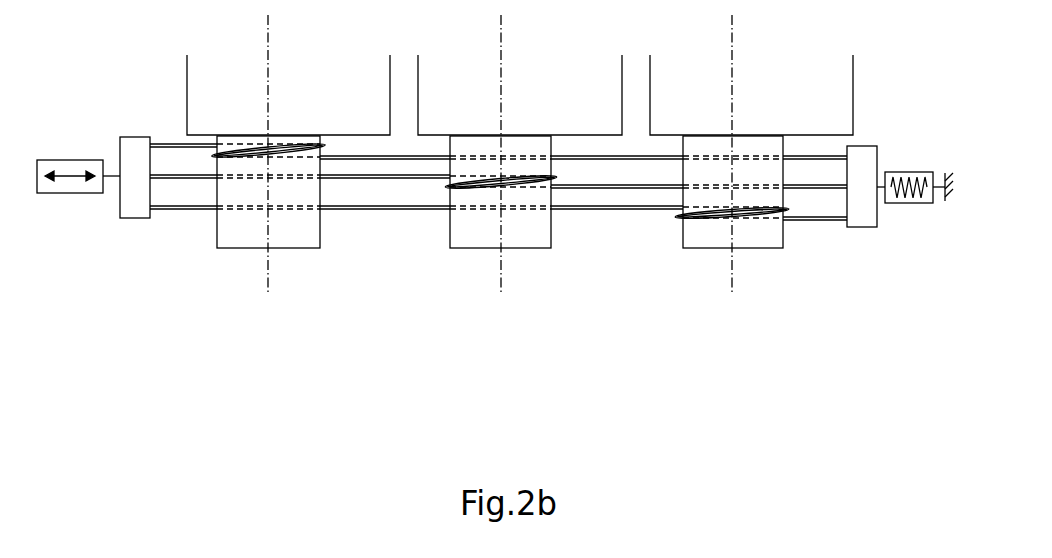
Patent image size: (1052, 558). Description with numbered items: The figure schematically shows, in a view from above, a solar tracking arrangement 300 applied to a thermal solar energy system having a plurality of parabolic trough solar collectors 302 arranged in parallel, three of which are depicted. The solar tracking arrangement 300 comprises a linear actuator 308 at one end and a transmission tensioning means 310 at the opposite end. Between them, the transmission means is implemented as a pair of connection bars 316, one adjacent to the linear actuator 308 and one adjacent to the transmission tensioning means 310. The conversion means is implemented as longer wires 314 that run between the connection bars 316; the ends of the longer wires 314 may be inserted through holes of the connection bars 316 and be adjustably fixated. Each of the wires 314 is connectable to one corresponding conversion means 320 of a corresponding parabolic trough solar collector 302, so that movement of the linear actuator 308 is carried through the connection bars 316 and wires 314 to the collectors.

The solar tracking arrangement 300 is at (495, 251).
The parabolic trough solar collector 302 is at (302, 84).
The linear actuator 308 is at (63, 195).
The transmission tensioning means 310 is at (927, 204).
The longer wires 314 is at (620, 159).
The connection bars 316 is at (135, 208).
The conversion means 320 is at (233, 240).